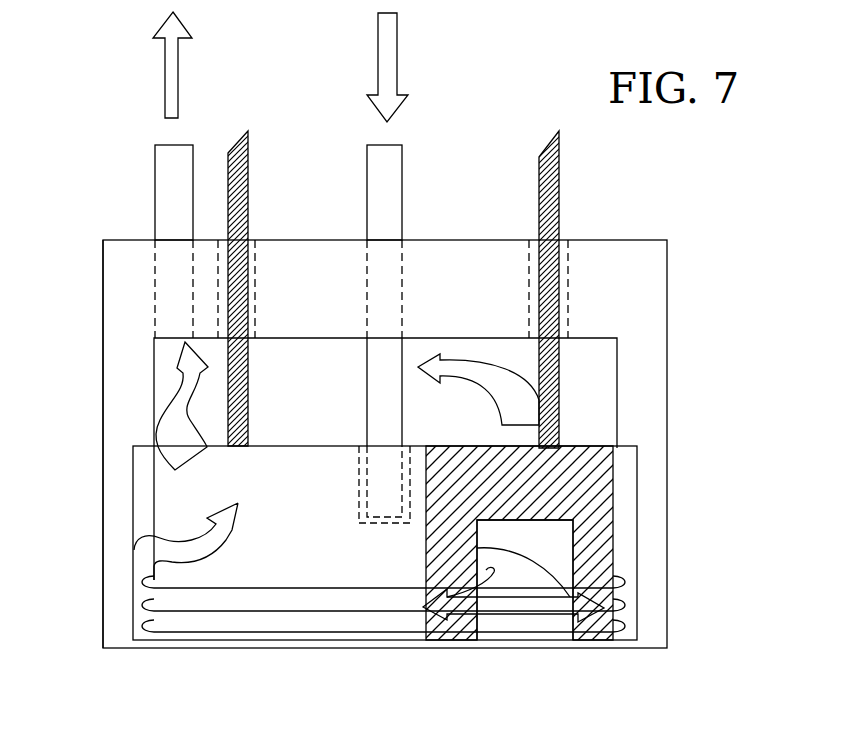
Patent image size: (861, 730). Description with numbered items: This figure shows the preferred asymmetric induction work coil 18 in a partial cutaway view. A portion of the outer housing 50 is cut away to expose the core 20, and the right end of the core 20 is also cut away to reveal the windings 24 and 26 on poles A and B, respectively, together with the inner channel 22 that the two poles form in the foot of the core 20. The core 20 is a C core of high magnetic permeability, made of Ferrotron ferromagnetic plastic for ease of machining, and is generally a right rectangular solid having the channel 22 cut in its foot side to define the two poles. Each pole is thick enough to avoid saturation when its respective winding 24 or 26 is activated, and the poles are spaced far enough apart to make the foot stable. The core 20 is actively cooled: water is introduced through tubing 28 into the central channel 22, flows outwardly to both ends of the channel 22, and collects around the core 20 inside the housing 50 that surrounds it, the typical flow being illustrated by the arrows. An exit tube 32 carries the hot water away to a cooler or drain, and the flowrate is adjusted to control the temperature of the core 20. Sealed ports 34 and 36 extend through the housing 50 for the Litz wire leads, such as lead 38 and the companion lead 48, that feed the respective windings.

The coil 18 is at (686, 300).
The core 20 is at (613, 527).
The channel 22 is at (547, 556).
The winding 24 is at (148, 640).
The winding 26 is at (625, 640).
The tubing 28 is at (402, 192).
The exit tube 32 is at (155, 177).
The sealed port 34 is at (259, 297).
The sealed port 36 is at (568, 272).
The Litz wire lead 38 is at (248, 190).
The pin 48 is at (559, 192).
The housing 50 is at (103, 335).